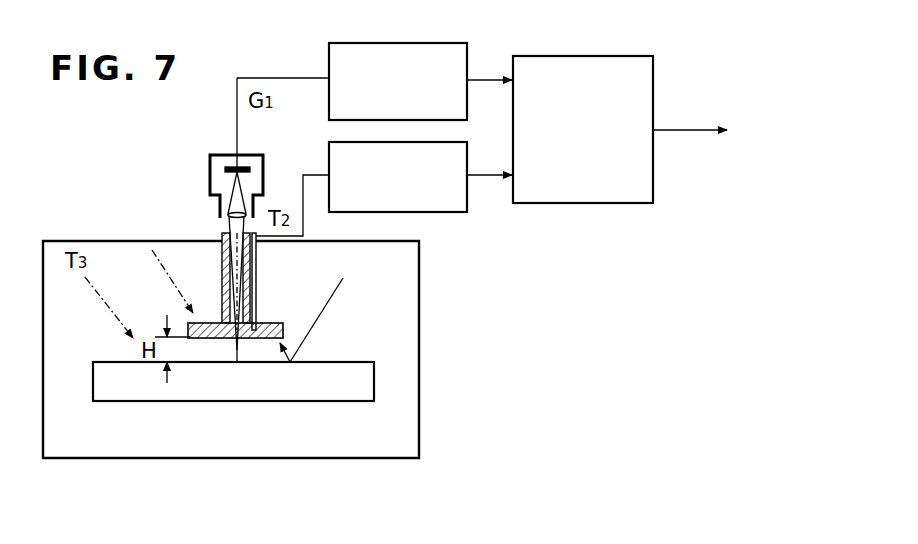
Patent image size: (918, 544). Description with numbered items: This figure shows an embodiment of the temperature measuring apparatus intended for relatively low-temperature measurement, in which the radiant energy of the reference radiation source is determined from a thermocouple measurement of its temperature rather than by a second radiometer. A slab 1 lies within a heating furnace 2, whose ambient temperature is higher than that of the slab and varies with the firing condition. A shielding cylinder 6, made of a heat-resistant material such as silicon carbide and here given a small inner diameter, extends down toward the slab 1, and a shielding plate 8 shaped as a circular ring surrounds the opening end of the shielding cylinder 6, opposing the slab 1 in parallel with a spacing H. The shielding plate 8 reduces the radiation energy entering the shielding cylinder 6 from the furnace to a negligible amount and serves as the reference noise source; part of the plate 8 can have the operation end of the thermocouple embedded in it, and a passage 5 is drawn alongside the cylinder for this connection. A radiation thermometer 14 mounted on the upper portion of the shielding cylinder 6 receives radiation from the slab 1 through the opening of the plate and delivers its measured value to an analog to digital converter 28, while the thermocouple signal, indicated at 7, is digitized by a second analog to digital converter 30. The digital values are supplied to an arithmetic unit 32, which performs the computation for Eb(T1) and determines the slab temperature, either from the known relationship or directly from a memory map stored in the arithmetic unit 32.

The slab 1 is at (352, 399).
The heating furnace 2 is at (420, 296).
The gas passage 5 is at (268, 266).
The shielding cylinder 6 is at (222, 272).
The thermometer signal input 7 is at (468, 163).
The shielding plate 8 is at (283, 327).
The radiation thermometer 14 is at (227, 213).
The analog to digital converter 28 is at (467, 57).
The analog to digital converter 30 is at (452, 200).
The arithmetic unit 32 is at (653, 57).